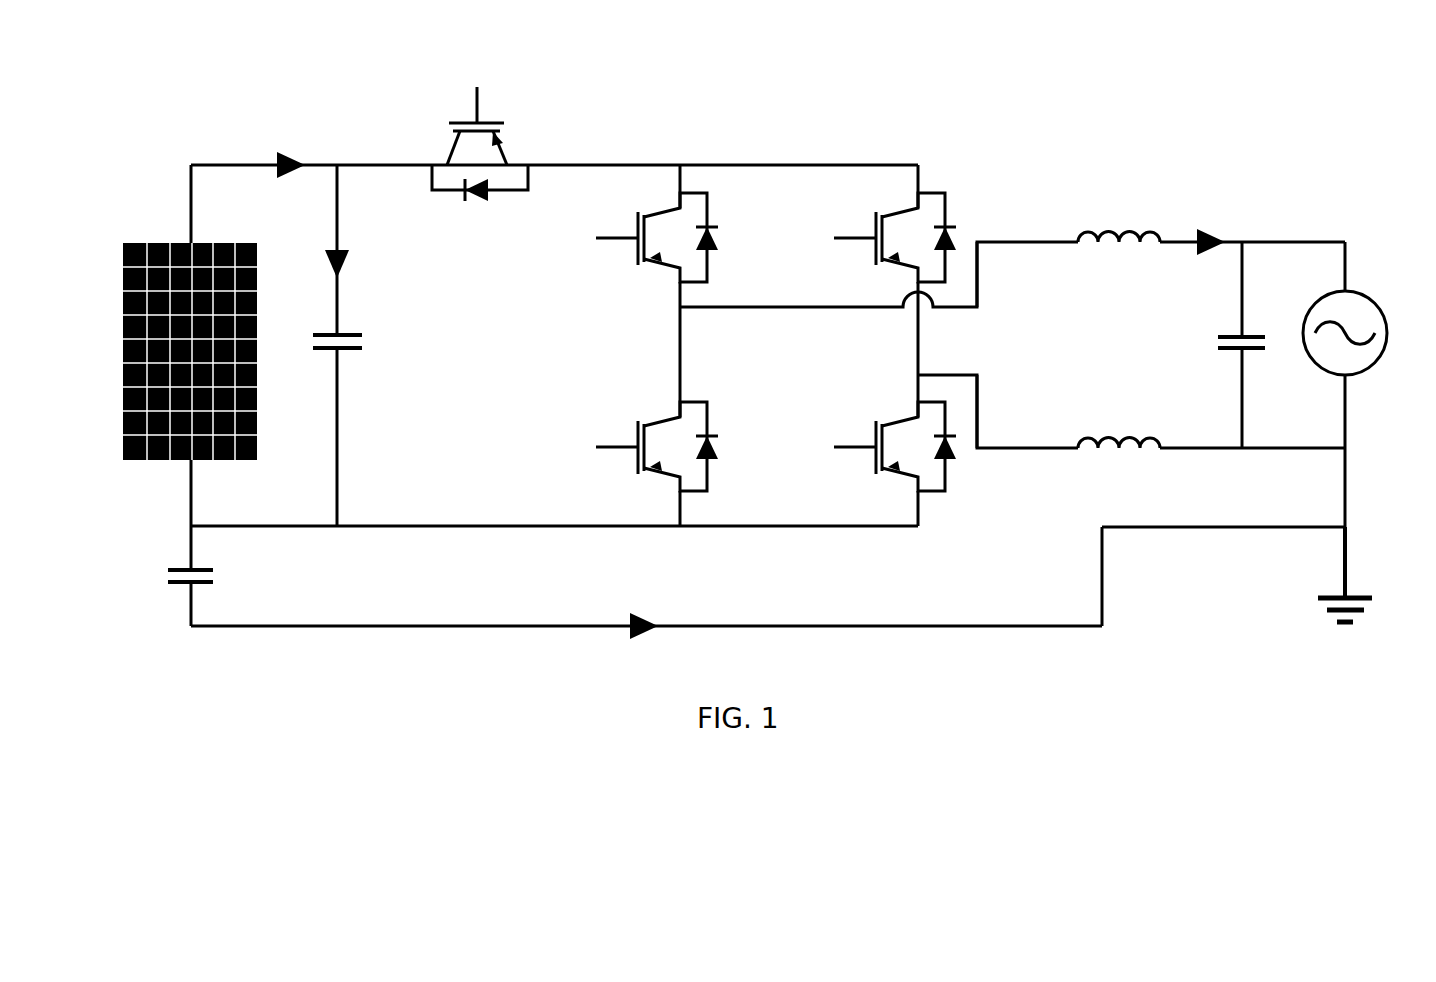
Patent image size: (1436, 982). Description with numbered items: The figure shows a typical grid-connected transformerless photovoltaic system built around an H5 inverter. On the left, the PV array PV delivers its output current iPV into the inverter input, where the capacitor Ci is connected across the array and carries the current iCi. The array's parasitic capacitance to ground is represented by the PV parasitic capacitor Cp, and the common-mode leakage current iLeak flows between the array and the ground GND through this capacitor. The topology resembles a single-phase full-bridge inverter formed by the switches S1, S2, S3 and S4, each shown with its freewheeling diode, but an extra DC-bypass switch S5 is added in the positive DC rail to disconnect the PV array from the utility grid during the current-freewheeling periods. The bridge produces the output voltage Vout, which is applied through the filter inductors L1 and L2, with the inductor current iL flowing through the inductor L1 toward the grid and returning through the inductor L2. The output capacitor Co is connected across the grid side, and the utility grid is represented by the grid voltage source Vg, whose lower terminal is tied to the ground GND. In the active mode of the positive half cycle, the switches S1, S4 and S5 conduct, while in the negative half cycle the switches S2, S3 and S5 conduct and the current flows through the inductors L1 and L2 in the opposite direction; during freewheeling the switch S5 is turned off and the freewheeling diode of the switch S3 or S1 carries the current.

The PV array PV is at (158, 351).
The PV array output current iPV is at (261, 144).
The capacitor Ci is at (367, 345).
The current through capacitor Ci iCi is at (361, 255).
The PV parasitic capacitor Cp is at (224, 580).
The CM leakage current iLeak is at (599, 607).
The DC-bypass switch S5 is at (480, 124).
The switch S1 is at (633, 283).
The switch S2 is at (635, 464).
The switch S3 is at (873, 283).
The switch S4 is at (873, 464).
The output voltage Vout is at (1007, 345).
The inductor L1 is at (1114, 238).
The current through inductor L1 iL is at (1200, 217).
The inductor L2 is at (1115, 443).
The output capacitor Co is at (1207, 345).
The utility grid voltage Vg is at (1369, 333).
The ground GND is at (1300, 574).